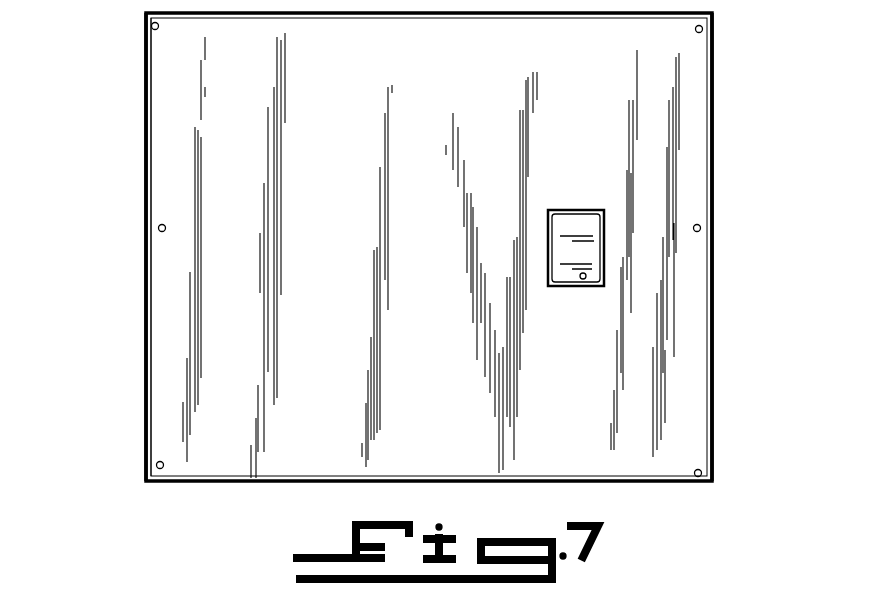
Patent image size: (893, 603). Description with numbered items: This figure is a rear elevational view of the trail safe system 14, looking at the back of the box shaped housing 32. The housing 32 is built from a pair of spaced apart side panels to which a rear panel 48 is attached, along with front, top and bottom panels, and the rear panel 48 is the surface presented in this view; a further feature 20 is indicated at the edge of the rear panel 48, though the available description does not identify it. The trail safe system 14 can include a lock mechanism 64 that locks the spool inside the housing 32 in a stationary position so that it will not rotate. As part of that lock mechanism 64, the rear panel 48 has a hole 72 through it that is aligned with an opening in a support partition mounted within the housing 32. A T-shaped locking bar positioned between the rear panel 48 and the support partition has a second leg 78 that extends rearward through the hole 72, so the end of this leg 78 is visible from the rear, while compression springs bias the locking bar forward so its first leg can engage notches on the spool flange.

The trail safe system 14 is at (107, 190).
The panel 20 is at (143, 328).
The box shaped housing 32 is at (715, 313).
The rear panel 48 is at (163, 408).
The lock mechanism 64 is at (573, 210).
The second leg 78 is at (560, 227).
The hole 72 is at (583, 279).